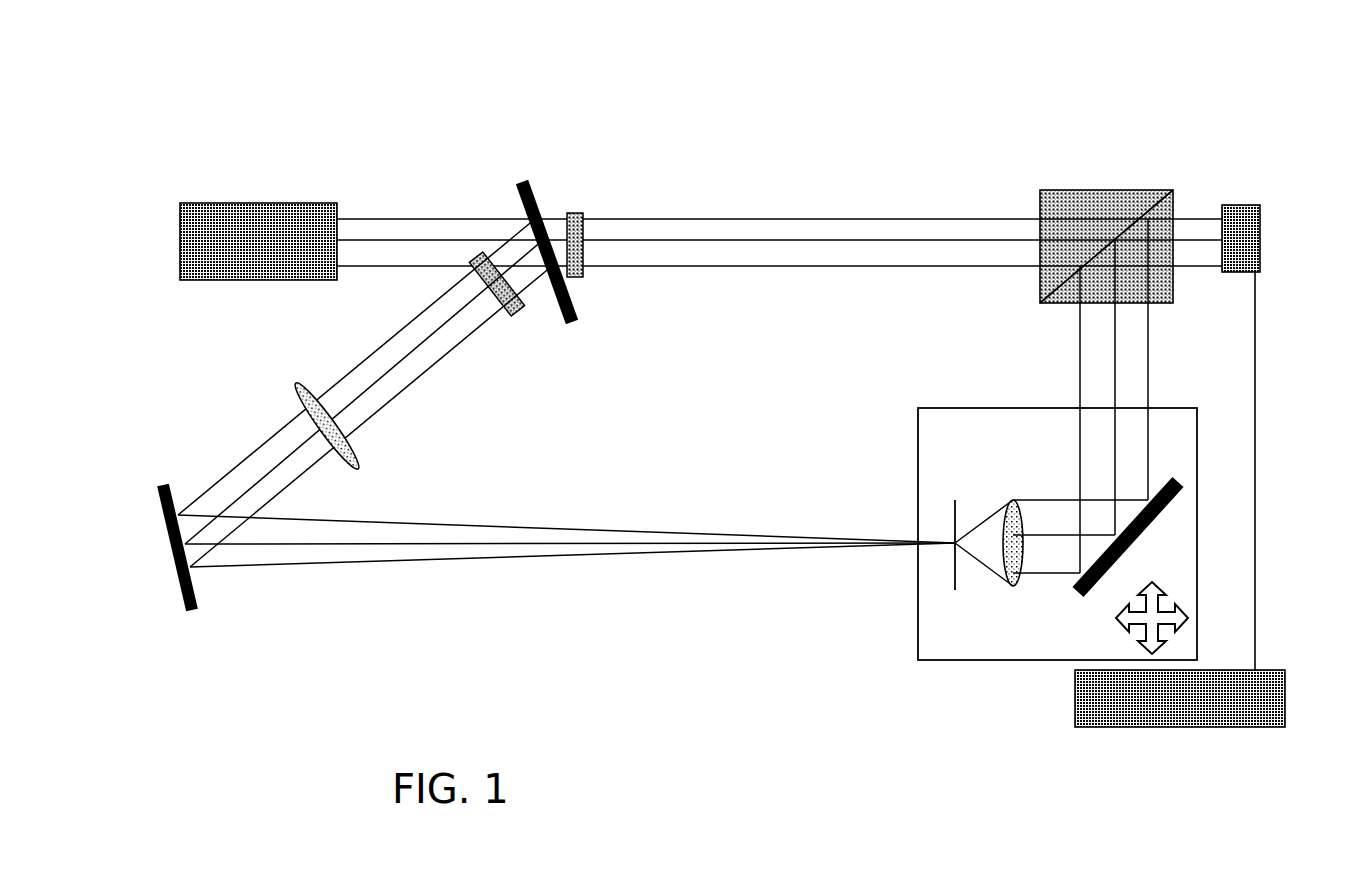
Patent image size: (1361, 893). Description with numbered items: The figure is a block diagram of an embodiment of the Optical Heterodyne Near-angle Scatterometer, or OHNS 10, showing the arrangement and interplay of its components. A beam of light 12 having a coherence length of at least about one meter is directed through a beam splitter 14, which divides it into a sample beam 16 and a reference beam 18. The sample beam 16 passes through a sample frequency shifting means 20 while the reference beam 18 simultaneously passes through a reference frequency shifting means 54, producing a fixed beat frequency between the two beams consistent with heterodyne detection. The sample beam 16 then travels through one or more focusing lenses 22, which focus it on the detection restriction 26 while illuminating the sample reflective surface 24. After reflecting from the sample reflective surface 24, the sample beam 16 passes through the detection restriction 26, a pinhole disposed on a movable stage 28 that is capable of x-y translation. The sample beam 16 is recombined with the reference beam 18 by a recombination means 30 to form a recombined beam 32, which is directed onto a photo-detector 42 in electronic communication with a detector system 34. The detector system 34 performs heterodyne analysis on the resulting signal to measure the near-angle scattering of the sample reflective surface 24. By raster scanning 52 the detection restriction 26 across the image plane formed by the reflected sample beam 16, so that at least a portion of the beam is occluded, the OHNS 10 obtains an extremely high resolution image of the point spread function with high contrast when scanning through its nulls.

The Optical Heterodyne Near-angle Scatterometer 10 is at (778, 122).
The beam of light 12 is at (406, 212).
The beam splitter 14 is at (524, 176).
The sample beam 16 is at (446, 365).
The reference beam 18 is at (695, 212).
The sample frequency shifting means 20 is at (518, 313).
The focusing lens 22 is at (297, 385).
The sample reflective surface 24 is at (160, 487).
The detection restriction 26 is at (951, 494).
The movable stage 28 is at (998, 408).
The recombination means 30 is at (1042, 190).
The recombined beam 32 is at (1191, 214).
The detector system 34 is at (1266, 402).
The photo-detector 42 is at (1266, 200).
The raster scanning 52 is at (1137, 617).
The reference frequency shifting means 54 is at (582, 276).